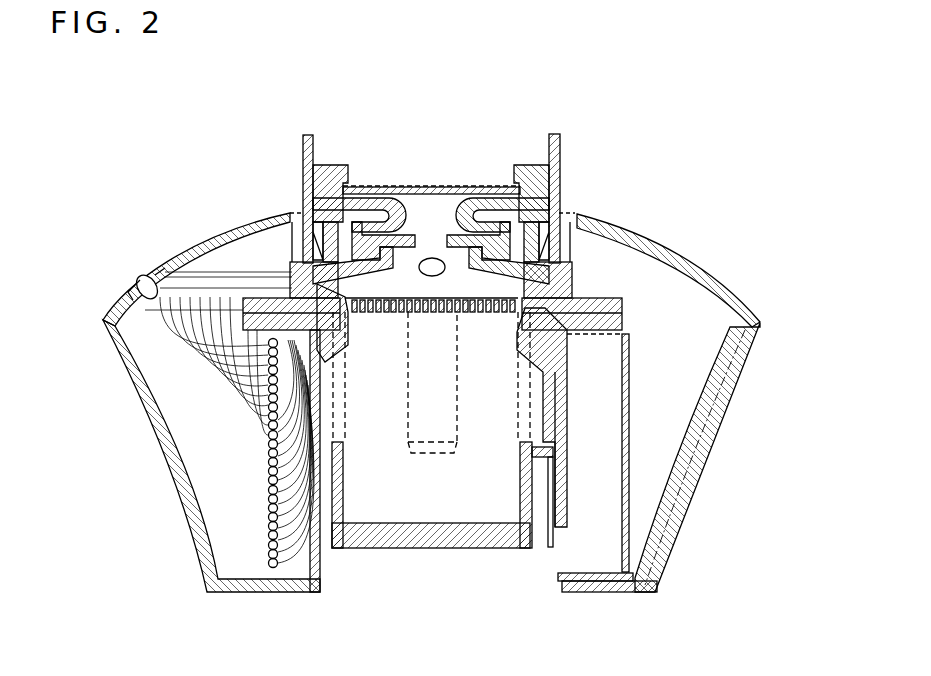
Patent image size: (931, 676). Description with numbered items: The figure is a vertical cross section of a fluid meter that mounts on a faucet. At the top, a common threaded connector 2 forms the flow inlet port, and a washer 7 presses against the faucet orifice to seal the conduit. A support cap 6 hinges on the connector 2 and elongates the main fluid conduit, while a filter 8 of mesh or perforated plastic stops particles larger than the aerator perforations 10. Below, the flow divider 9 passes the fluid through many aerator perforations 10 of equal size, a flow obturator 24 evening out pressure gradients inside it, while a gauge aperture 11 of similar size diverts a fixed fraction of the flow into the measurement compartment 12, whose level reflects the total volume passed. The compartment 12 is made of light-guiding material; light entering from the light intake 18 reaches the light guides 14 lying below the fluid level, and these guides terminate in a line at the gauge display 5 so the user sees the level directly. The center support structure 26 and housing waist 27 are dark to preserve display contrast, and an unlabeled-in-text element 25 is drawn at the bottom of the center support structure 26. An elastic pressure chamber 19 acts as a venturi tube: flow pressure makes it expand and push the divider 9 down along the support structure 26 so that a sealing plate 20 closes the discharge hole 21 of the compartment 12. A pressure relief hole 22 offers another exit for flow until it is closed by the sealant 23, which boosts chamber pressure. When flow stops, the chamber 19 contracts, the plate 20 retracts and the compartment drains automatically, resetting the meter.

The threaded connector 2 is at (298, 149).
The gauge display 5 is at (140, 275).
The support cap 6 is at (288, 262).
The washer 7 is at (530, 162).
The filter 8 is at (402, 182).
The flow divider 9 is at (517, 270).
The aerator perforations 10 is at (422, 316).
The gauge aperture 11 is at (530, 298).
The measurement compartment 12 is at (597, 424).
The light guides 14 is at (202, 372).
The light intake 18 is at (713, 417).
The pressure chamber 19 is at (465, 203).
The sealing plate 20 is at (547, 530).
The discharge hole 21 is at (561, 552).
The pressure relief hole 22 is at (340, 300).
The sealant 23 is at (300, 390).
The flow obturator 24 is at (437, 280).
The cup bottom 25 is at (403, 550).
The center support structure 26 is at (320, 513).
The housing waist 27 is at (185, 497).